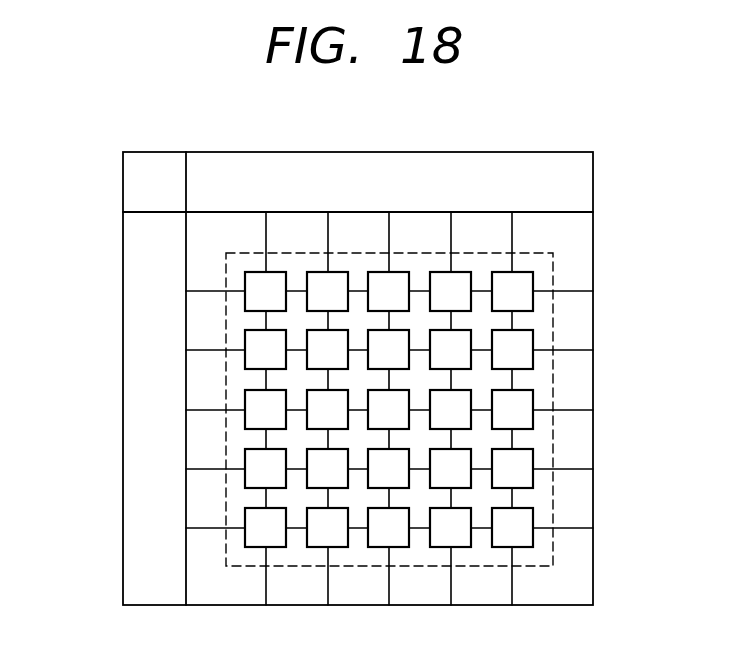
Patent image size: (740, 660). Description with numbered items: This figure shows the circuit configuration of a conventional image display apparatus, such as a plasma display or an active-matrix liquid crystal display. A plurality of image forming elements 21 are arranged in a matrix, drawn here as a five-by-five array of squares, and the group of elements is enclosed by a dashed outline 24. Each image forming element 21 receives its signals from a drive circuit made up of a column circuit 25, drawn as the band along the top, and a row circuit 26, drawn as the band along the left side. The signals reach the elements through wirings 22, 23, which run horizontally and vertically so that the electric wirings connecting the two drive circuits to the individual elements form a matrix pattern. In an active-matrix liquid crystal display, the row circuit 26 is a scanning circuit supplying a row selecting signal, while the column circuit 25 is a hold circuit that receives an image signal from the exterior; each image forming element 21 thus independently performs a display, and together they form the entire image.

The image forming element 21 is at (522, 282).
The wiring 22 is at (575, 291).
The wiring 23 is at (452, 237).
The display region 24 is at (553, 440).
The column circuit 25 is at (236, 186).
The row circuit 26 is at (145, 507).